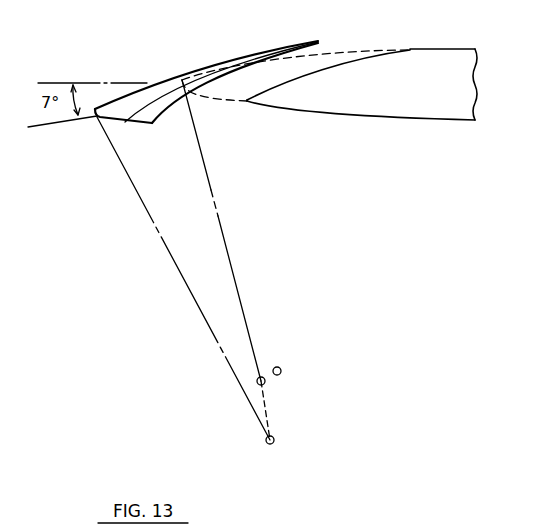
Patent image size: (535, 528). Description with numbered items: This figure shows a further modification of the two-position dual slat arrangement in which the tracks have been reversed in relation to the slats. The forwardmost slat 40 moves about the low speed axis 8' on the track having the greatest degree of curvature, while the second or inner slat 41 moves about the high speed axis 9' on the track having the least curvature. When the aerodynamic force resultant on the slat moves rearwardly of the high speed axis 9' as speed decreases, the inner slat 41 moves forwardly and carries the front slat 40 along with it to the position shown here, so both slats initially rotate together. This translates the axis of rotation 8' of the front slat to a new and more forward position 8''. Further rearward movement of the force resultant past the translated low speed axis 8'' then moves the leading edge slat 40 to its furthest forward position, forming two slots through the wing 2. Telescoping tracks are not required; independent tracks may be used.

The wing 2 is at (440, 63).
The forwardmost slat 40 is at (167, 72).
The inner slat 41 is at (263, 53).
The translated low speed axis 8'' is at (273, 352).
The low speed axis 8' is at (297, 362).
The high speed axis 9' is at (294, 435).